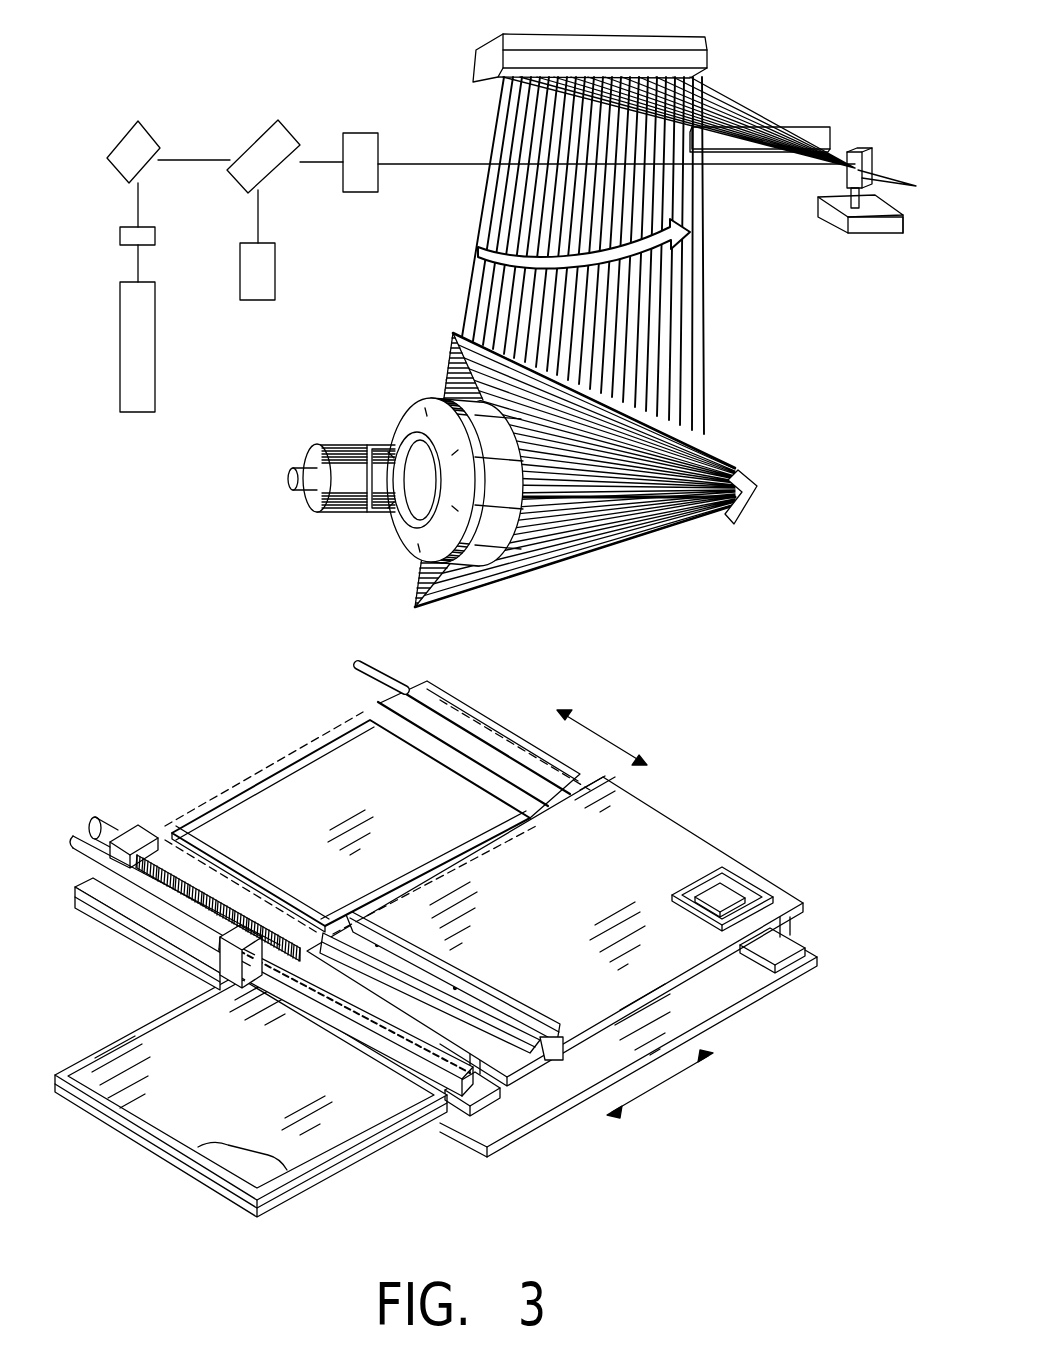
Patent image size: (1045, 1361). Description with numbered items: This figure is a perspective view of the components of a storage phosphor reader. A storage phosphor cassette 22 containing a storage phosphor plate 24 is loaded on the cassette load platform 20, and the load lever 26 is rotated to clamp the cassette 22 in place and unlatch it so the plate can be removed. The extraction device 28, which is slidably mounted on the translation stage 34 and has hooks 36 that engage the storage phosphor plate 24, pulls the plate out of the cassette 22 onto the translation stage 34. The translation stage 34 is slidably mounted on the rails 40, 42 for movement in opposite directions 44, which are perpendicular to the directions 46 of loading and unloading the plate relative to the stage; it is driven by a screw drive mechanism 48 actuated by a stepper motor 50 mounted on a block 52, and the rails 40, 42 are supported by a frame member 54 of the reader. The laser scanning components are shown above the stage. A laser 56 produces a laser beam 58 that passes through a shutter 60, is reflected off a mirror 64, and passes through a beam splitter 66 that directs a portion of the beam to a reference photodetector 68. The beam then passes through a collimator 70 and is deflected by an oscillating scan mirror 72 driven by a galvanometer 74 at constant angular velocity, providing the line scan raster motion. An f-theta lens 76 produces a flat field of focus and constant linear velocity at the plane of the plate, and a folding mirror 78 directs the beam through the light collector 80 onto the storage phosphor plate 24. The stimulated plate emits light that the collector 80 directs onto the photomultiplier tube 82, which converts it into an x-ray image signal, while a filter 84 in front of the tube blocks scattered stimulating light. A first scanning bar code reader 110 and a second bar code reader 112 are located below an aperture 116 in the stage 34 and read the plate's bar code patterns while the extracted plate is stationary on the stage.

The cassette load platform 20 is at (362, 1147).
The storage phosphor cassette 22 is at (89, 1050).
The storage phosphor plate 24 is at (243, 1147).
The load lever 26 is at (355, 1018).
The extraction device 28 is at (517, 996).
The translation stage 34 is at (700, 832).
The hooks 36 is at (375, 950).
The rail 40 is at (388, 688).
The rail 42 is at (70, 855).
The opposite directions 44 is at (610, 747).
The directions of loading and unloading 46 is at (662, 1081).
The screw drive mechanism 48 is at (283, 912).
The stepper motor 50 is at (113, 820).
The block 52 is at (157, 840).
The frame member 54 is at (780, 985).
The laser 56 is at (120, 374).
The laser beam 58 is at (136, 264).
The shutter 60 is at (120, 238).
The mirror 64 is at (120, 139).
The beam splitter 66 is at (248, 143).
The reference photodetector 68 is at (275, 270).
The collimator 70 is at (378, 150).
The oscillating scan mirror 72 is at (905, 182).
The galvanometer 74 is at (878, 236).
The f-theta lens 76 is at (806, 126).
The folding mirror 78 is at (473, 73).
The light collector 80 is at (697, 443).
The photomultiplier tube 82 is at (423, 398).
The filter 84 is at (523, 527).
The first scanning bar code reader 110 is at (799, 896).
The second bar code reader 112 is at (744, 878).
The aperture 116 is at (697, 885).